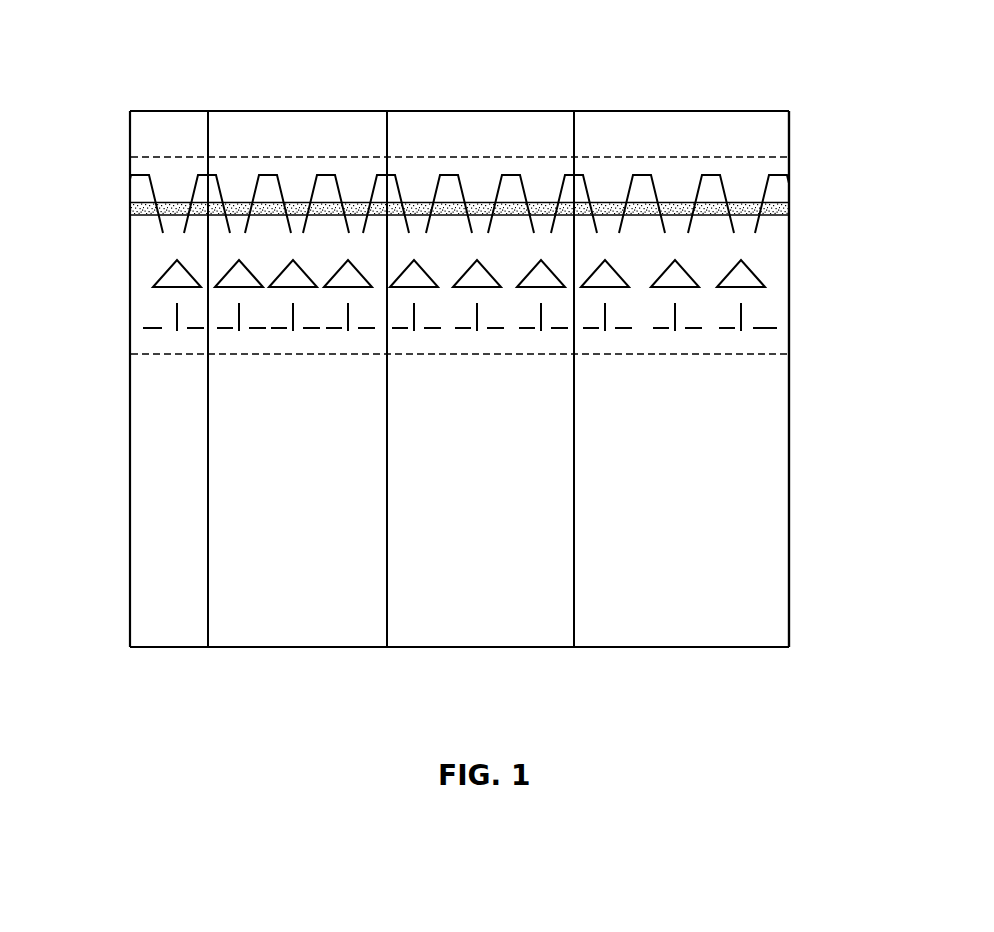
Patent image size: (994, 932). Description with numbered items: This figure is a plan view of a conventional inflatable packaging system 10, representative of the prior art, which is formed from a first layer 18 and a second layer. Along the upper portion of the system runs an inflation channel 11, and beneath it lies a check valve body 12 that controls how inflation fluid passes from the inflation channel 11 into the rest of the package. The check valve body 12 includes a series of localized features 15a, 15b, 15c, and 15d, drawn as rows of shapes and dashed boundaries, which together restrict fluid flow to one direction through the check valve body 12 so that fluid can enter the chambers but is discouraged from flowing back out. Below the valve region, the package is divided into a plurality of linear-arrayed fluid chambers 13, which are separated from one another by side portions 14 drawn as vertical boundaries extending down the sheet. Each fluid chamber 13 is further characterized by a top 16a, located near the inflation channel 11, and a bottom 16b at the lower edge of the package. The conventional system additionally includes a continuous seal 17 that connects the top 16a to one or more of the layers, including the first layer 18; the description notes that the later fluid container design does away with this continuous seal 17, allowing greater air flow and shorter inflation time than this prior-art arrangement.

The inflatable packaging system 10 is at (122, 43).
The inflation channel 11 is at (145, 135).
The check valve body 12 is at (145, 263).
The fluid chambers 13 is at (163, 627).
The side portions 14 is at (208, 513).
The localized feature 15a is at (778, 188).
The localized feature 15b is at (750, 267).
The localized feature 15c is at (742, 313).
The localized feature 15d is at (763, 330).
The top 16a is at (663, 157).
The bottom 16b is at (762, 648).
The continuous seal 17 is at (145, 210).
The first layer 18 is at (789, 565).